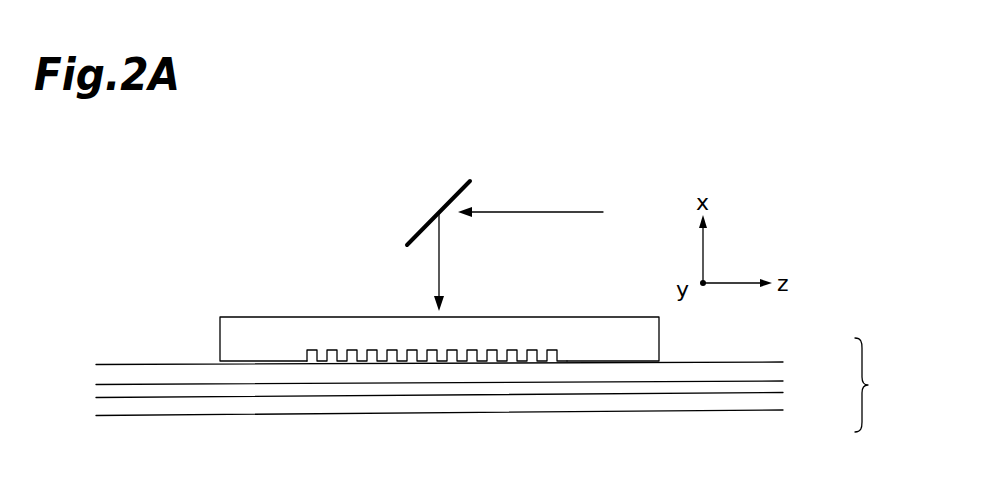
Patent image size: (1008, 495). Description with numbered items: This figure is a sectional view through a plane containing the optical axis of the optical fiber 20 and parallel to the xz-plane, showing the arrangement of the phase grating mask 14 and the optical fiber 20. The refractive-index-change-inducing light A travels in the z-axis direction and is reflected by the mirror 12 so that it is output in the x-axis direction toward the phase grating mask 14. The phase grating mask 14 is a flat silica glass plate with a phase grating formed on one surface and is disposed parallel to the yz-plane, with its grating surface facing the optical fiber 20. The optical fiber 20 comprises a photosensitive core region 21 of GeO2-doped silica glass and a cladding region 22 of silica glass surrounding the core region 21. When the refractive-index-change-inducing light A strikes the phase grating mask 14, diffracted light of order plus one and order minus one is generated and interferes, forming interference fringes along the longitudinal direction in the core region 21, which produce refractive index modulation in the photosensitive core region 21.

The mirror 12 is at (445, 206).
The phase grating mask 14 is at (249, 317).
The optical fiber 20 is at (879, 385).
The core region 21 is at (776, 385).
The cladding region 22 is at (773, 373).
The refractive-index-change-inducing light A is at (440, 257).